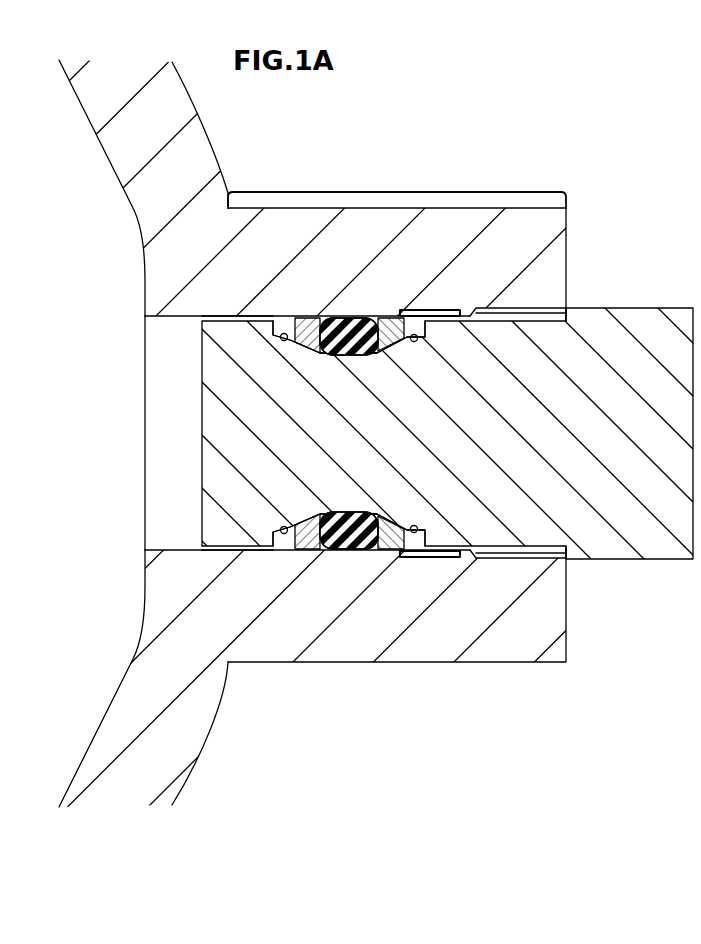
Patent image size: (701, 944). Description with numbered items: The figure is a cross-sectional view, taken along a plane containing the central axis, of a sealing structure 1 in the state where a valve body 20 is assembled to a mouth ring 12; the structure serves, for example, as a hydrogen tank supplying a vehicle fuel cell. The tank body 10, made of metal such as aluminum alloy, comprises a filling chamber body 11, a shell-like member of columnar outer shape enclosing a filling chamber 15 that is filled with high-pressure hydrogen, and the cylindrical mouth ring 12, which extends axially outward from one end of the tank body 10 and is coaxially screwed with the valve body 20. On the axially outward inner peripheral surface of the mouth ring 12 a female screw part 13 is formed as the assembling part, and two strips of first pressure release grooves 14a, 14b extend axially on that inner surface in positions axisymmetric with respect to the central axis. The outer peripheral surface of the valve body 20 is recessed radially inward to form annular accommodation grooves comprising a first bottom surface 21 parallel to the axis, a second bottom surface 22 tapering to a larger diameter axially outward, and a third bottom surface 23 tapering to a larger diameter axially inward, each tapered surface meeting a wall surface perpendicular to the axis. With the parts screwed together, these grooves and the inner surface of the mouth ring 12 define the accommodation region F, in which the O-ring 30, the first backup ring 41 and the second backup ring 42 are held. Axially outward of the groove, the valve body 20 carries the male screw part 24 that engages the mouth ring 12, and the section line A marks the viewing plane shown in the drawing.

The sealing structure 1 is at (553, 135).
The tank body 10 is at (290, 695).
The filling chamber body 11 is at (185, 743).
The mouth ring 12 is at (323, 192).
The female screw part 13 is at (468, 313).
The first pressure release groove 14a is at (430, 311).
The first pressure release groove 14b is at (432, 557).
The filling chamber 15 is at (78, 448).
The valve body 20 is at (663, 562).
The first bottom surface 21 is at (340, 352).
The second bottom surface 22 is at (417, 341).
The third bottom surface 23 is at (285, 342).
The male screw part 24 is at (577, 314).
The O-ring 30 is at (357, 319).
The first backup ring 41 is at (393, 318).
The second backup ring 42 is at (306, 318).
The accommodation region F is at (284, 330).
The section line A is at (433, 167).